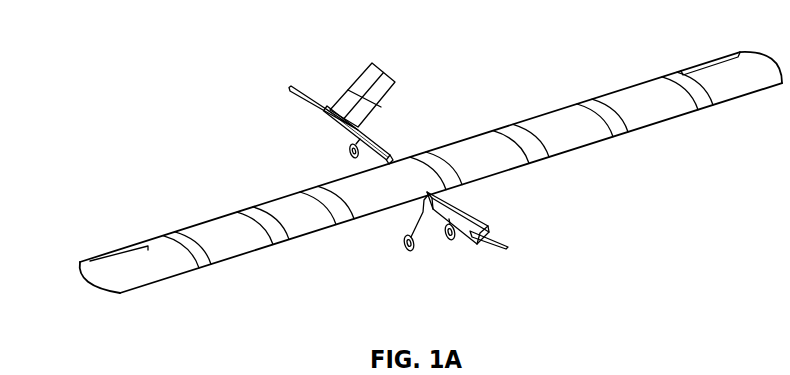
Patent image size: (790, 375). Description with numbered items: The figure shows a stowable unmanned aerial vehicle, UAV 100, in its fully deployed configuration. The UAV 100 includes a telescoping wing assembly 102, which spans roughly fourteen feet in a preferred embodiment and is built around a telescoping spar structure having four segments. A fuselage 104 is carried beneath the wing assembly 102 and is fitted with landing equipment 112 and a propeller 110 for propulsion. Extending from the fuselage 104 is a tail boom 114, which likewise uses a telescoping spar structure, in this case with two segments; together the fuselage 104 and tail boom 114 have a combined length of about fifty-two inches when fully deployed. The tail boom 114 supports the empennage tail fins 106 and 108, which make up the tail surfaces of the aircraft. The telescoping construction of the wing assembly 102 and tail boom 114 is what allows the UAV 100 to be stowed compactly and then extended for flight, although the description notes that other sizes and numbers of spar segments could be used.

The UAV 100 is at (111, 58).
The telescoping wing assembly 102 is at (624, 97).
The fuselage 104 is at (472, 207).
The empennage tail fin 106 is at (291, 90).
The empennage tail fin 108 is at (376, 64).
The propeller 110 is at (503, 252).
The landing equipment 112 is at (348, 152).
The tail boom 114 is at (373, 136).